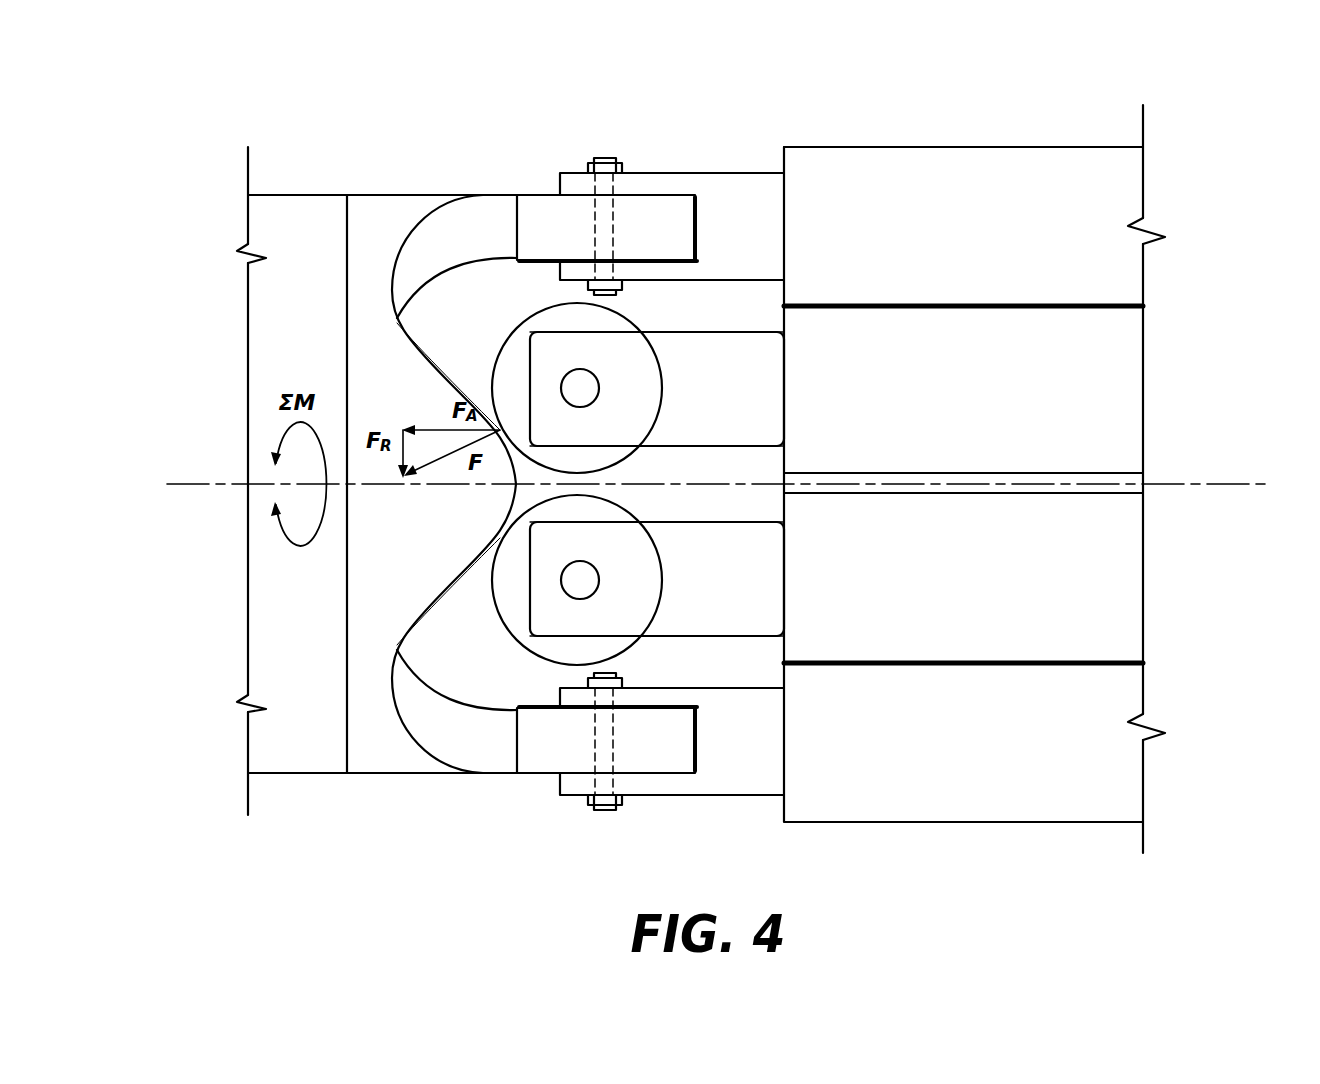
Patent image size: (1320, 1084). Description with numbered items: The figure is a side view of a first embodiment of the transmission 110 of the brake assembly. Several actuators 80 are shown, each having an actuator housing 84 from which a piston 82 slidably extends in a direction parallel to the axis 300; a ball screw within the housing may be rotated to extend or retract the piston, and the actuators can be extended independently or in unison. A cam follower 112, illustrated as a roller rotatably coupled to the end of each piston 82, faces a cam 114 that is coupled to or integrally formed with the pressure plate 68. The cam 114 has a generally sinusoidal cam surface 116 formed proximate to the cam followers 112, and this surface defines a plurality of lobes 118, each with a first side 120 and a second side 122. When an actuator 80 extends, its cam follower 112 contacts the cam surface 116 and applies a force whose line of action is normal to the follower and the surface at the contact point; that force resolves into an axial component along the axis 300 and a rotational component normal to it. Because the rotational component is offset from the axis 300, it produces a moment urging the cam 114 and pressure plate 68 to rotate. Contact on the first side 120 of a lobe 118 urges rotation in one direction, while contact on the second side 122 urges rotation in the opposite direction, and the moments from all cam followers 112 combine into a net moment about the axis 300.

The pressure plate 68 is at (302, 195).
The actuator 80 is at (1022, 183).
The piston 82 is at (705, 173).
The actuator housing 84 is at (812, 147).
The transmission 110 is at (978, 114).
The cam follower 112 is at (540, 195).
The cam 114 is at (370, 195).
The cam surface 116 is at (435, 195).
The lobe 118 is at (410, 265).
The first side 120 is at (462, 385).
The second side 122 is at (493, 195).
The axis 300 is at (190, 484).